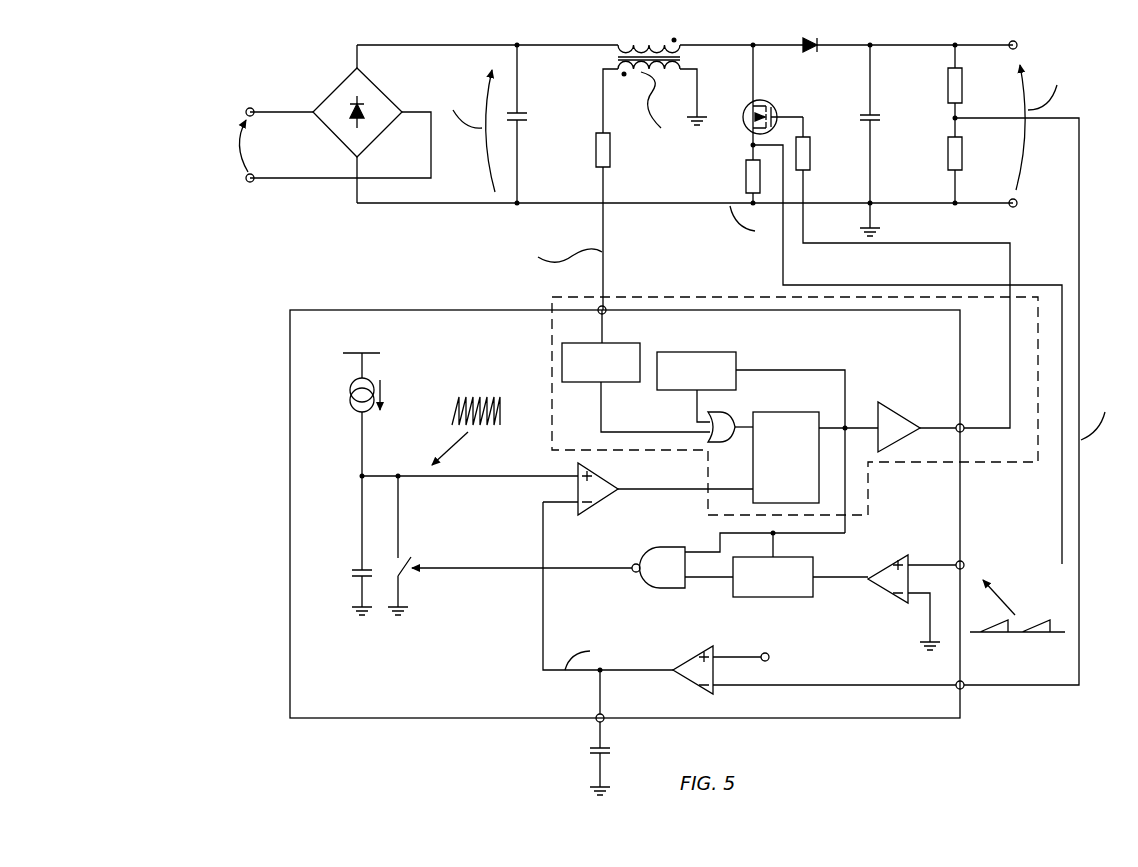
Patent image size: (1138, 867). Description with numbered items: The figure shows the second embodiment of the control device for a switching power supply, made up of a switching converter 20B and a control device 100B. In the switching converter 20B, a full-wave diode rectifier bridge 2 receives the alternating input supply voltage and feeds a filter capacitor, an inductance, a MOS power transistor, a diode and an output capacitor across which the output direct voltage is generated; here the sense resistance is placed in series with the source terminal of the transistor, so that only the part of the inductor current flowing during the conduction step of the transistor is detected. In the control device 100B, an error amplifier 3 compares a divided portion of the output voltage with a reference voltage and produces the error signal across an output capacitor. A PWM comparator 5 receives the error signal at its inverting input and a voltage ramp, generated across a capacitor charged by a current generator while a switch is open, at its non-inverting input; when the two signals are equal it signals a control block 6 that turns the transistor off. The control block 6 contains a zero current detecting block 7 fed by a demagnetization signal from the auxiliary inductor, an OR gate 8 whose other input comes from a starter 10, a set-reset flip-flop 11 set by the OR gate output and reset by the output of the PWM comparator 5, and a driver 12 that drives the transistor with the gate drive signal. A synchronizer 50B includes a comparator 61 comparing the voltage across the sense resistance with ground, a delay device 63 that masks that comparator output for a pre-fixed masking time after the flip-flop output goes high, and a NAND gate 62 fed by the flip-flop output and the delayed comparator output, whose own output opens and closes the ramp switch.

The switching converter 20B is at (538, 32).
The full-wave diode rectifier bridge 2 is at (326, 100).
The control device 100B is at (288, 503).
The control block 6 is at (652, 296).
The zero current detecting block 7 is at (617, 343).
The starter 10 is at (698, 352).
The OR gate 8 is at (716, 441).
The set-reset flip-flop 11 is at (787, 412).
The driver 12 is at (897, 410).
The PWM comparator 5 is at (598, 513).
The synchronizer 50B is at (925, 522).
The NAND gate 62 is at (658, 547).
The delay device 63 is at (790, 597).
The comparator 61 is at (895, 555).
The error amplifier 3 is at (705, 648).